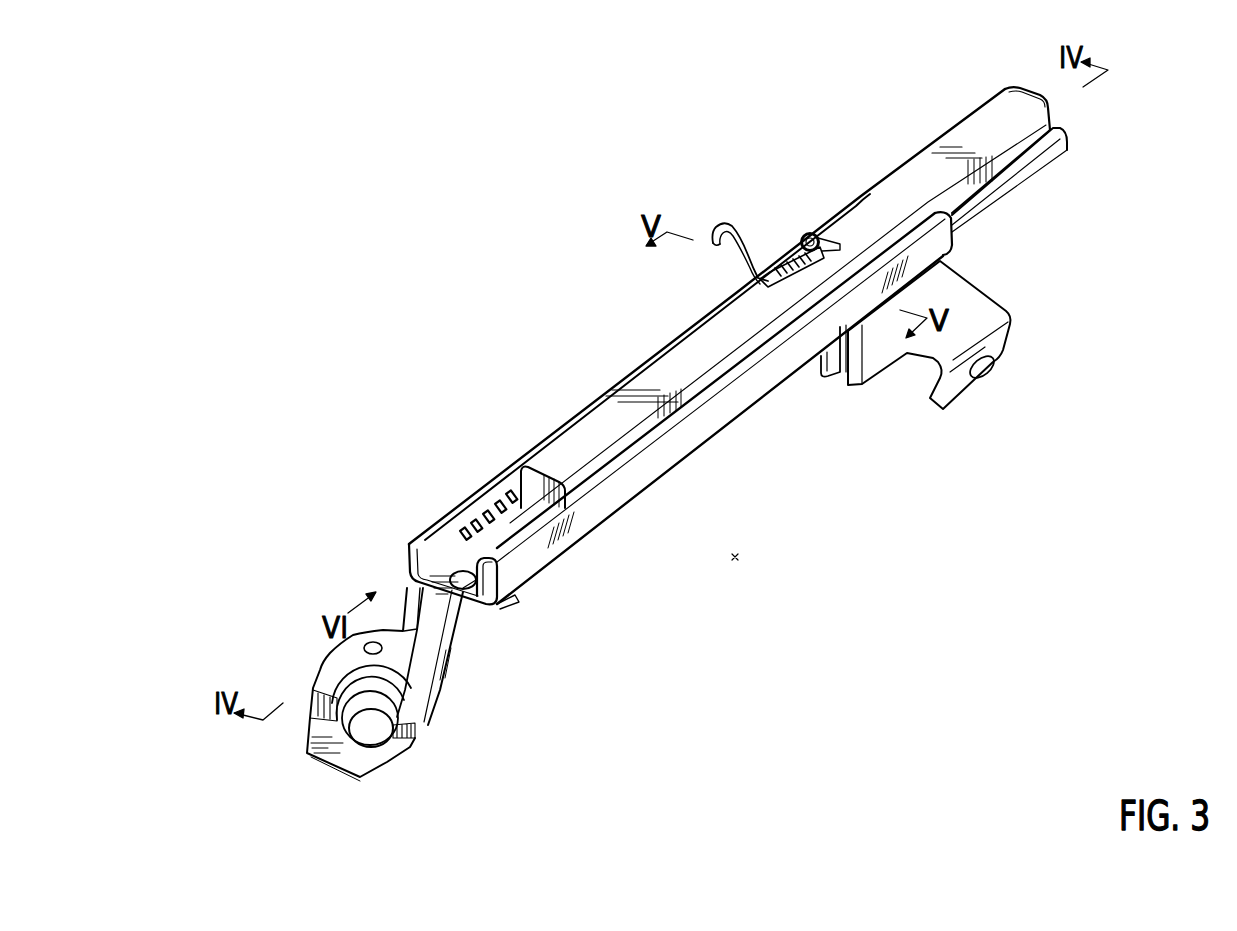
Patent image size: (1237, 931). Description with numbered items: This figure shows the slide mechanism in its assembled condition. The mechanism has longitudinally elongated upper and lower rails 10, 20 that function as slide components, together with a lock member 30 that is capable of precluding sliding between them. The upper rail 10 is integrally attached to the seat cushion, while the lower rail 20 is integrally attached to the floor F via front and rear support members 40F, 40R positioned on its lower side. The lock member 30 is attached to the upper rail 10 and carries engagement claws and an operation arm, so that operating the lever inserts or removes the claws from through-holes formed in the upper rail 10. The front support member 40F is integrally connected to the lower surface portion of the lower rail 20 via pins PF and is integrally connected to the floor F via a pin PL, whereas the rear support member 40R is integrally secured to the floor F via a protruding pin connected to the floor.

The upper rail 10 is at (627, 441).
The lower rail 20 is at (700, 432).
The lock member 30 is at (780, 251).
The front support member 40F is at (452, 656).
The rear support member 40R is at (934, 354).
The pins PF is at (485, 553).
The pin PL is at (373, 732).
The floor F is at (738, 557).